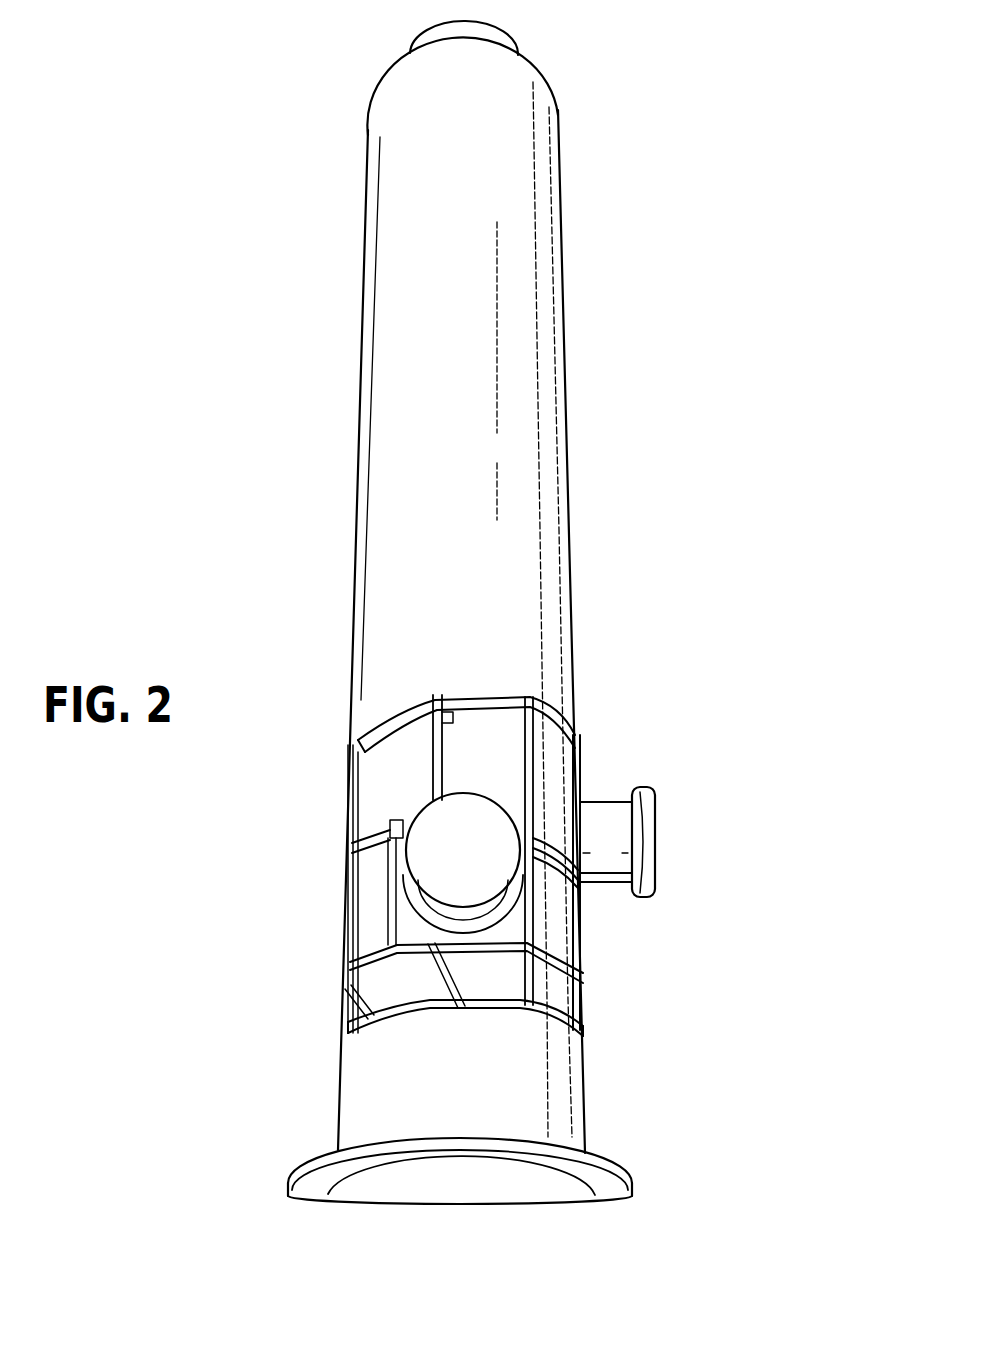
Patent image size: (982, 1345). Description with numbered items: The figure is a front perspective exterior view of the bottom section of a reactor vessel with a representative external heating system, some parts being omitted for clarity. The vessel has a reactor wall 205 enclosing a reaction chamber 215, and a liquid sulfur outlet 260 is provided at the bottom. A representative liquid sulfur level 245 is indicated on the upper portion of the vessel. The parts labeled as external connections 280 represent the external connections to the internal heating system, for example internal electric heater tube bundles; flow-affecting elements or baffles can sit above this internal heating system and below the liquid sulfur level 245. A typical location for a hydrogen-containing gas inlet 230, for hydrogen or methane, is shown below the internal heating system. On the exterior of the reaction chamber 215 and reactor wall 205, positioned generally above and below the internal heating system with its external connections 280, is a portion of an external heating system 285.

The reactor wall 205 is at (367, 297).
The reaction chamber 215 is at (567, 498).
The hydrogen-containing gas inlet 230 is at (348, 985).
The liquid sulfur level 245 is at (560, 170).
The liquid sulfur outlet 260 is at (453, 1058).
The external connections to the internal heating system 280 is at (460, 845).
The external heating system 285 is at (387, 893).